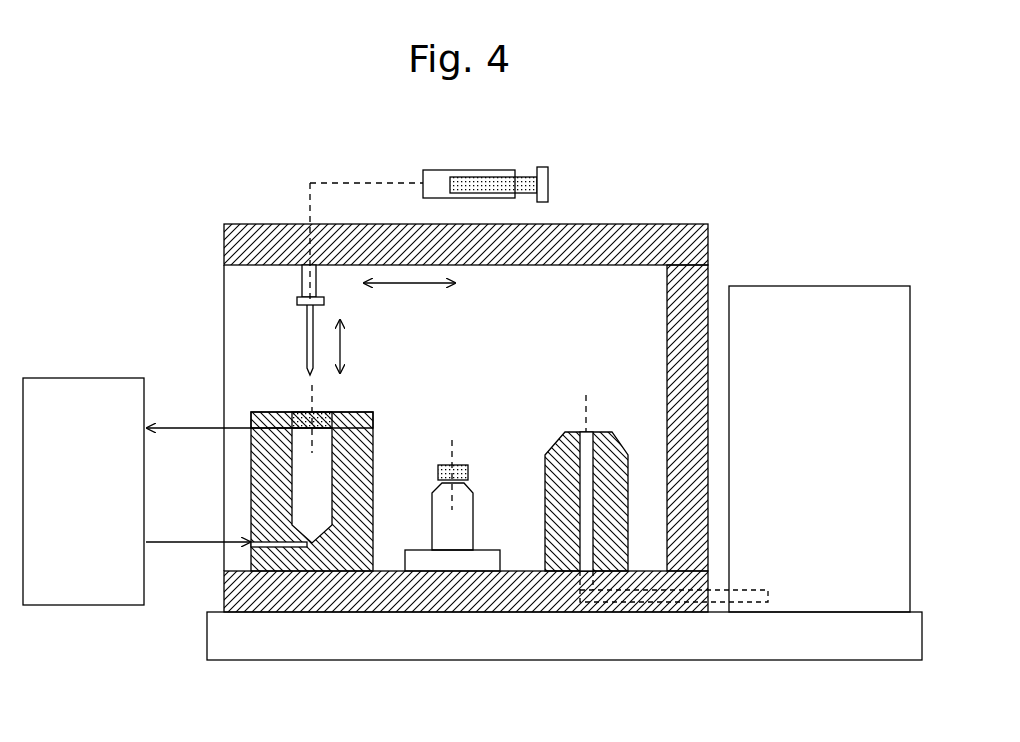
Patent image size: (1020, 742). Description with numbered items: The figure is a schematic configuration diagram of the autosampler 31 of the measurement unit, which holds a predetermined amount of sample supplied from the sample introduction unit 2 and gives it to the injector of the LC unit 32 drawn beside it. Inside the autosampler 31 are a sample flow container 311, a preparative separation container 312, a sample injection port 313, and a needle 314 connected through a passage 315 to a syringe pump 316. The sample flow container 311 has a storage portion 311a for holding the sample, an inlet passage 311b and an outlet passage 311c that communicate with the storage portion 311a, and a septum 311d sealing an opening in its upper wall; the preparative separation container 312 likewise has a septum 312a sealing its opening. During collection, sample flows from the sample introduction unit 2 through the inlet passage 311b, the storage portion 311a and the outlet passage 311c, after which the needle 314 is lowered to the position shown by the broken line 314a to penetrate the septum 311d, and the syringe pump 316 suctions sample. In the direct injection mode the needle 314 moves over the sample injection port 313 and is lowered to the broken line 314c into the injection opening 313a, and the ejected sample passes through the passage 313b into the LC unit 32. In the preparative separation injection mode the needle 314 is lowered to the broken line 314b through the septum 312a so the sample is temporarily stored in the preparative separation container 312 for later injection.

The sample introduction unit 2 is at (73, 378).
The autosampler 31 is at (193, 213).
The liquid chromatograph (LC) unit 32 is at (823, 285).
The sample flow container 311 is at (294, 470).
The storage portion 311a is at (297, 487).
The inlet passage 311b is at (251, 545).
The outlet passage 311c is at (251, 428).
The septum 311d is at (326, 412).
The preparative separation container 312 is at (465, 488).
The septum 312a is at (455, 473).
The sample injection port 313 is at (649, 538).
The injection opening 313a is at (578, 430).
The passage 313b is at (638, 605).
The needle 314 is at (307, 327).
The broken line (needle position above sample flow container) 314a is at (300, 388).
The broken line (needle position above preparative separation container) 314b is at (448, 455).
The broken line (needle position above sample injection port) 314c is at (588, 398).
The passage 315 is at (322, 181).
The syringe pump 316 is at (487, 170).